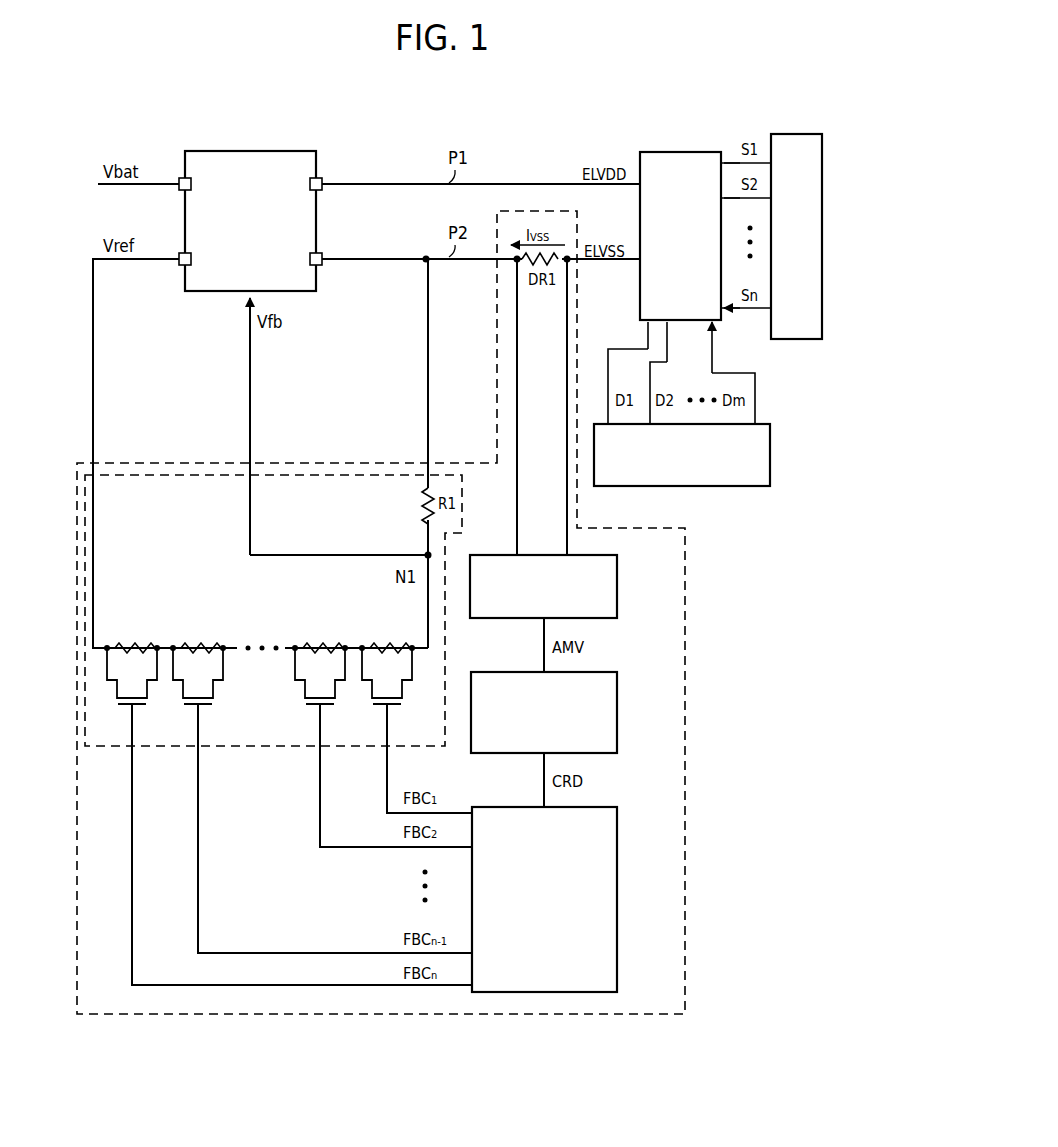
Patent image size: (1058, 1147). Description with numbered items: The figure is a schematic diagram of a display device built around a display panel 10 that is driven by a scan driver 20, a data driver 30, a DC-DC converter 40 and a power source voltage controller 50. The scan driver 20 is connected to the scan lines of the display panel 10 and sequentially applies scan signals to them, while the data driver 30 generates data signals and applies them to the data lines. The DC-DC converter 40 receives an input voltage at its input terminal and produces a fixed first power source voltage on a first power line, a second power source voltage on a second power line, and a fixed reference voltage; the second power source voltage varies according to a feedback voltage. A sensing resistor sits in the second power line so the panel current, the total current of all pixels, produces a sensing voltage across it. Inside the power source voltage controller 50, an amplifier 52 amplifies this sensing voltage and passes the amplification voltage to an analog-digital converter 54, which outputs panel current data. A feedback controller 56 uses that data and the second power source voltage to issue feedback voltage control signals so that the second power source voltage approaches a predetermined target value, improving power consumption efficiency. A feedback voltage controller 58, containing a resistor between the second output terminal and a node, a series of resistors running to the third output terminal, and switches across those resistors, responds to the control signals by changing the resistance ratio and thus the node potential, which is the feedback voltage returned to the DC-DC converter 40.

The display panel 10 is at (680, 152).
The scan driver 20 is at (798, 134).
The data driver 30 is at (735, 486).
The DC-DC converter 40 is at (270, 151).
The power source voltage controller 50 is at (685, 778).
The amplifier 52 is at (617, 588).
The analog-digital converter 54 is at (617, 716).
The feedback controller 56 is at (617, 898).
The feedback voltage controller 58 is at (261, 748).